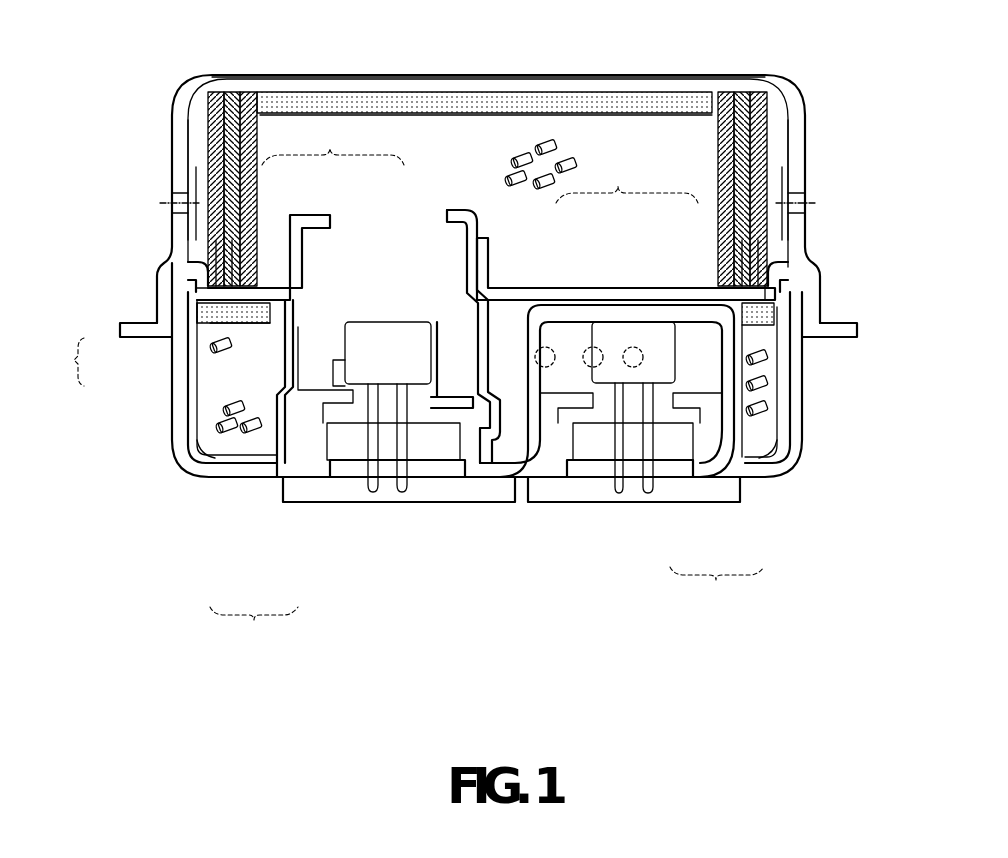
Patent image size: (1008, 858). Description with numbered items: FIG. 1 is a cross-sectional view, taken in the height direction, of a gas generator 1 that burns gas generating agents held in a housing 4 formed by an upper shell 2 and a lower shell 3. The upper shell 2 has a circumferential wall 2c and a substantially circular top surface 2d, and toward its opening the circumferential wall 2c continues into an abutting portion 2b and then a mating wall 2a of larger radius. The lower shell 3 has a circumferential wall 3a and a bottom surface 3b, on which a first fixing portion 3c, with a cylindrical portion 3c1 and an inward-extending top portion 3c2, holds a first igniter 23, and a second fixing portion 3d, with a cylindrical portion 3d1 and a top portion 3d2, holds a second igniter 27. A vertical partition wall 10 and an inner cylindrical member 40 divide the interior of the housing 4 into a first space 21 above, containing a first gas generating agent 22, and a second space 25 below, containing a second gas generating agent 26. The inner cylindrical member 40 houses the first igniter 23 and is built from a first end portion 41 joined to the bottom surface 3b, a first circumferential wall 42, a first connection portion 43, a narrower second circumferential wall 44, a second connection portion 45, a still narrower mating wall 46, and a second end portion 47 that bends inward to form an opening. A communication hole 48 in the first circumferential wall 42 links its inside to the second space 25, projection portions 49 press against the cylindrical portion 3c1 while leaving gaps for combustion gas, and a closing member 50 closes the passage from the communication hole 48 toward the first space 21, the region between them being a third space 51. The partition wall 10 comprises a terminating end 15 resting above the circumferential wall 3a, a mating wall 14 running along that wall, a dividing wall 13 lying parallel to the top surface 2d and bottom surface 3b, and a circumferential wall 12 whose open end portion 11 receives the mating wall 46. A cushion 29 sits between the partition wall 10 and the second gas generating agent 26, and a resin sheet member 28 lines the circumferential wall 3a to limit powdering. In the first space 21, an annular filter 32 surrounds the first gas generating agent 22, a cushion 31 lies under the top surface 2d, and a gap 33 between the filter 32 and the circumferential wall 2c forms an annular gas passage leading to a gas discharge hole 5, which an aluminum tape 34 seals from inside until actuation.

The gas generator 1 is at (358, 620).
The upper shell 2 is at (133, 344).
The mating wall 2a is at (182, 276).
The abutting portion 2b is at (160, 247).
The circumferential wall 2c is at (178, 142).
The top surface 2d is at (436, 75).
The lower shell 3 is at (172, 382).
The circumferential wall 3a is at (172, 427).
The bottom surface 3b is at (240, 470).
The first fixing portion 3c is at (362, 554).
The cylindrical portion 3c1 is at (290, 505).
The top portion 3c2 is at (322, 505).
The second fixing portion 3d is at (646, 536).
The cylindrical portion 3d1 is at (722, 472).
The top portion 3d2 is at (703, 472).
The housing 4 is at (72, 362).
The gas discharge hole 5 is at (172, 202).
The vertical partition wall 10 is at (480, 163).
The open end portion 11 is at (483, 262).
The circumferential wall 12 is at (300, 260).
The dividing wall 13 is at (336, 238).
The mating wall 14 is at (252, 270).
The terminating end 15 is at (262, 244).
The first space 21 is at (660, 158).
The first gas generating agent 22 is at (548, 143).
The first igniter 23 is at (370, 364).
The second space 25 is at (228, 390).
The second gas generating agent 26 is at (215, 414).
The second igniter 27 is at (615, 402).
The resin sheet member 28 is at (200, 462).
The cushion 29 is at (197, 314).
The cushion 31 is at (330, 91).
The filter 32 is at (242, 91).
The gap 33 is at (785, 122).
The aluminum tape 34 is at (208, 100).
The inner cylindrical member 40 is at (447, 207).
The first end portion 41 is at (472, 227).
The first circumferential wall 42 is at (481, 252).
The first connection portion 43 is at (474, 304).
The second circumferential wall 44 is at (476, 334).
The second connection portion 45 is at (440, 357).
The mating wall 46 is at (400, 402).
The second end portion 47 is at (372, 422).
The communication hole 48 is at (292, 474).
The projection portion 49 is at (497, 432).
The closing member 50 is at (305, 324).
The third space 51 is at (303, 392).